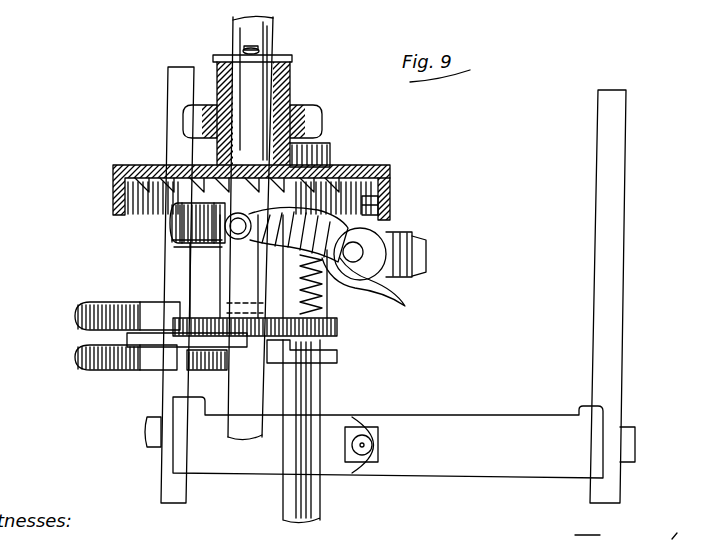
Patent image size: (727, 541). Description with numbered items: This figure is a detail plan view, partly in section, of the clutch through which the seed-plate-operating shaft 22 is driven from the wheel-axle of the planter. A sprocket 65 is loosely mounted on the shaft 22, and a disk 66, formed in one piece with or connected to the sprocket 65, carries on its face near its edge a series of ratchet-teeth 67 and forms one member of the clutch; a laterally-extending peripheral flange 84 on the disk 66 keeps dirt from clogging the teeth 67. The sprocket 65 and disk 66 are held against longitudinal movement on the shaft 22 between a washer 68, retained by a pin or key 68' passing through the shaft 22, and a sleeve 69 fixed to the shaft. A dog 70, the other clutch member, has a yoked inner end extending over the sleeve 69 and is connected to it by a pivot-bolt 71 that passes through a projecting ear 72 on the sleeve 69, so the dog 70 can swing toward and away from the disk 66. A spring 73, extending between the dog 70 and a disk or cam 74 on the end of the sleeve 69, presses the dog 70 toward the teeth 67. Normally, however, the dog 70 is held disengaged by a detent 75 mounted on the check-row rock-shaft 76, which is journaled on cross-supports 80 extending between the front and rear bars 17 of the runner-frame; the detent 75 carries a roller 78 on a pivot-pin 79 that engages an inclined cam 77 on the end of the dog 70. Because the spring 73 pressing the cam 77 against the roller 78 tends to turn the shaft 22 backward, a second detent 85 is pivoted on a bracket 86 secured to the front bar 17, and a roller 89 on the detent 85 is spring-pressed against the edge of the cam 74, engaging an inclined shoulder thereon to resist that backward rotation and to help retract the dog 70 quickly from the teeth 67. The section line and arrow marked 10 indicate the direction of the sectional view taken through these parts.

The feed mechanism 10 is at (100, 193).
The frame plate 17 is at (616, 248).
The shaft 22 is at (273, 24).
The flanged collar 65 is at (300, 110).
The housing 66 is at (333, 170).
The housing side wall 67 is at (388, 172).
The hub 68 is at (287, 129).
The pin 68' is at (218, 37).
The sleeve 69 is at (228, 275).
The lever arm 70 is at (392, 218).
The pivot pin 71 is at (183, 248).
The bushing 72 is at (183, 222).
The spring 73 is at (330, 312).
The collar 74 is at (330, 332).
The roller 75 is at (428, 250).
The rod 76 is at (313, 388).
The fork 77 is at (405, 298).
The roller body 78 is at (395, 258).
The roller hub 79 is at (357, 250).
The bracket 80 is at (440, 433).
The stop 84 is at (392, 188).
The arm 85 is at (168, 344).
The boss 86 is at (125, 366).
The block 89 is at (223, 344).